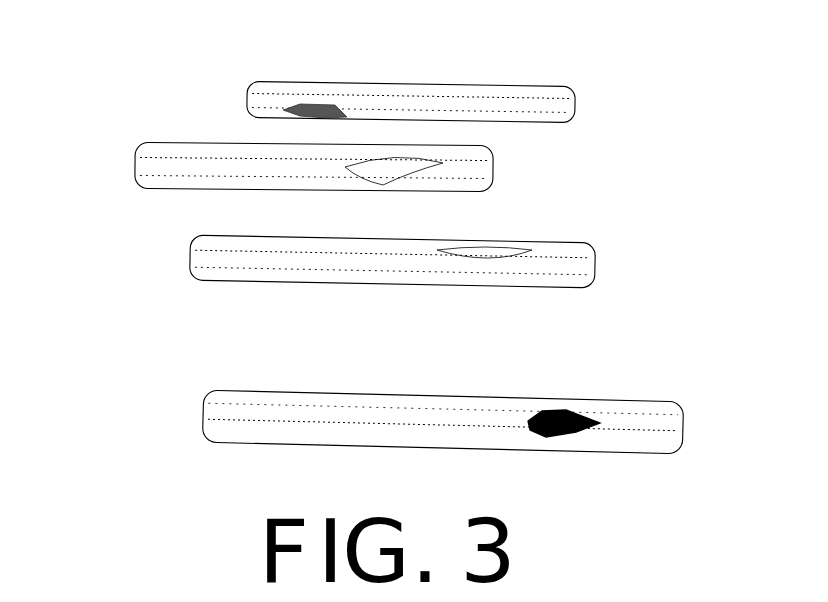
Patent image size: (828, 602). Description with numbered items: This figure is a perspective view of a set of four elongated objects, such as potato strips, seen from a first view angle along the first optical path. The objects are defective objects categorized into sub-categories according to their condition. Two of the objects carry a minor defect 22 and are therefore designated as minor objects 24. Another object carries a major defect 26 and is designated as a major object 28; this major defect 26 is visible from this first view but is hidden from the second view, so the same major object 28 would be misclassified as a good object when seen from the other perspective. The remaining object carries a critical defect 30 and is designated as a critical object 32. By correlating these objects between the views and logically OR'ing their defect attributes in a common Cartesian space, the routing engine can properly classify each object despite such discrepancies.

The minor defect 22 is at (377, 167).
The minor object 24 is at (167, 148).
The major defect 26 is at (347, 117).
The major object 28 is at (518, 90).
The critical defect 30 is at (557, 412).
The critical object 32 is at (253, 398).